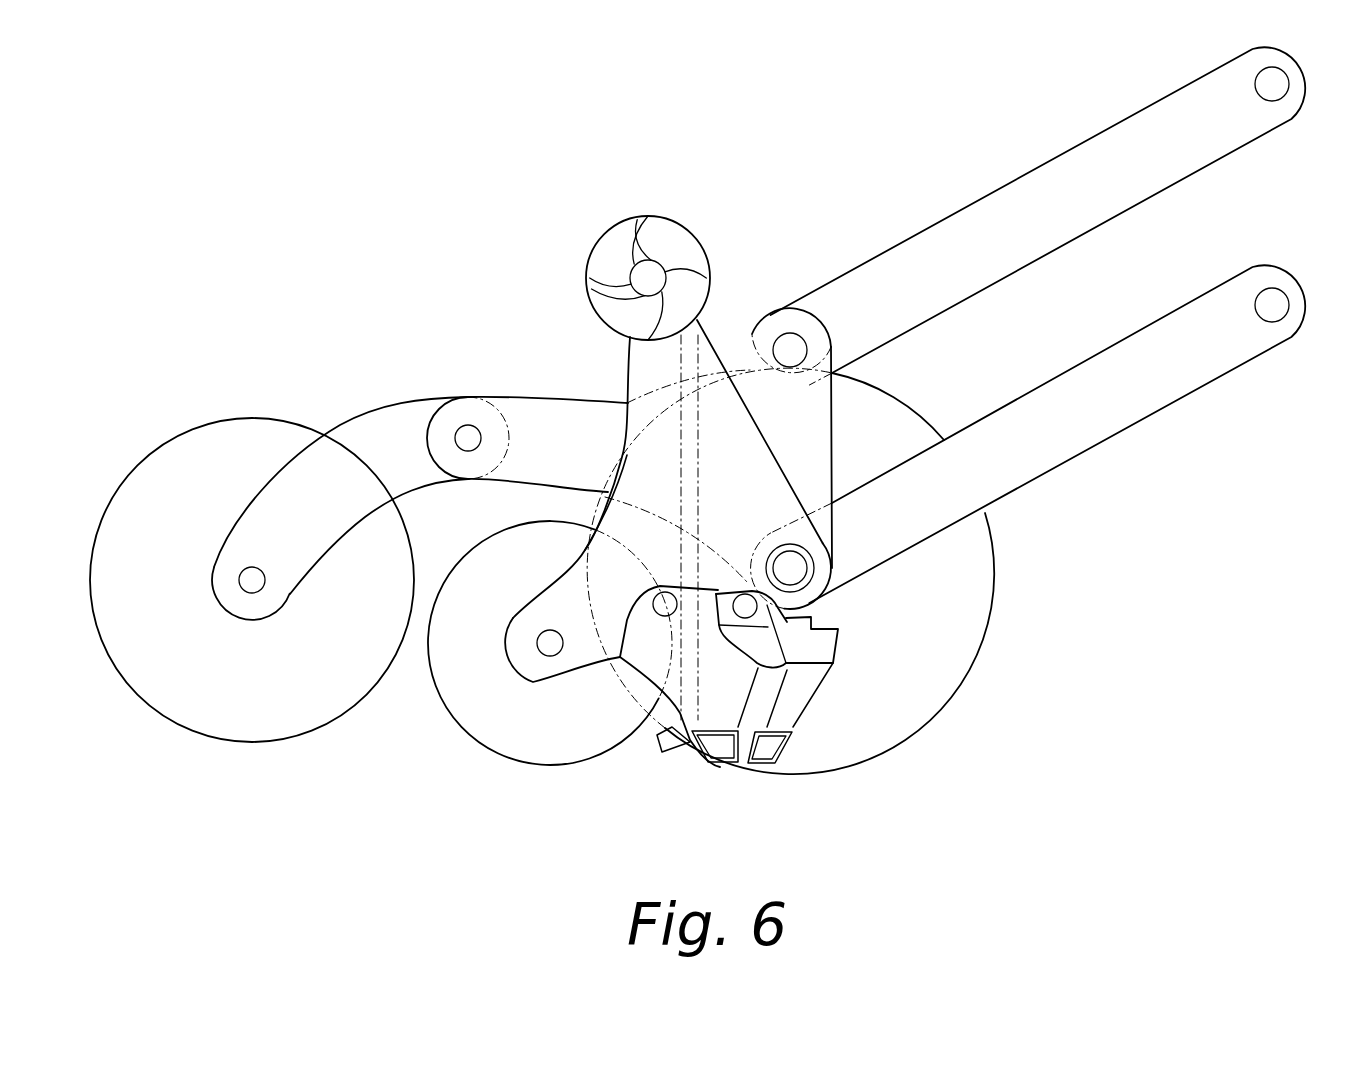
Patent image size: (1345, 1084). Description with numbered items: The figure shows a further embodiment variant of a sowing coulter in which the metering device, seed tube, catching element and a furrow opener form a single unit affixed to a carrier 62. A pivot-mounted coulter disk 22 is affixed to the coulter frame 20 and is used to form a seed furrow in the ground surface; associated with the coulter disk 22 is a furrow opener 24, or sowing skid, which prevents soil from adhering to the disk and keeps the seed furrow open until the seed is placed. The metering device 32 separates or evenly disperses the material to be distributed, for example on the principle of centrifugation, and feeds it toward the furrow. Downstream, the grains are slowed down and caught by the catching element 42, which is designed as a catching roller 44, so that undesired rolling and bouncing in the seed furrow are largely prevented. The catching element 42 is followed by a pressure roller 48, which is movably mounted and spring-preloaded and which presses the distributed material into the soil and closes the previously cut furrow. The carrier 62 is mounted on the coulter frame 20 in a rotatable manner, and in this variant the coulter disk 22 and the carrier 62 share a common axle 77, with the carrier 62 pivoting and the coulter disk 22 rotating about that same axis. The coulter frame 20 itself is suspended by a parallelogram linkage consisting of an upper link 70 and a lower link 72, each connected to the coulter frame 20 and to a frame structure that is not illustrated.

The coulter frame 20 is at (533, 400).
The coulter disk 22 is at (965, 585).
The furrow opener 24 is at (806, 712).
The metering device 32 is at (601, 243).
The catching element 42 is at (485, 737).
The catching roller 44 is at (550, 643).
The pressure roller 48 is at (162, 678).
The carrier 62 is at (634, 367).
The upper link 70 is at (925, 230).
The lower link 72 is at (1142, 424).
The common axle 77 is at (800, 577).